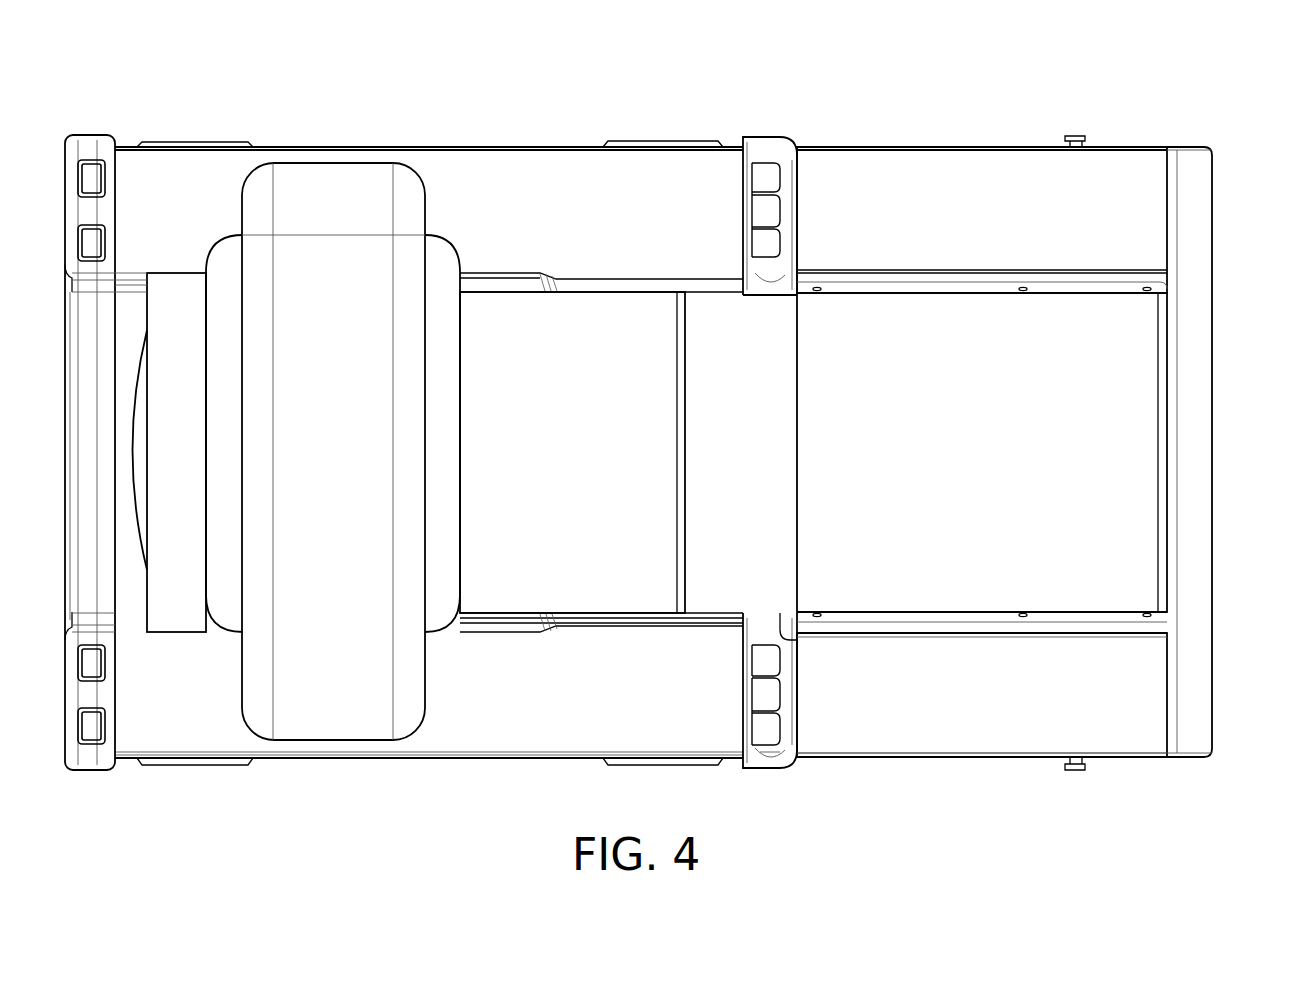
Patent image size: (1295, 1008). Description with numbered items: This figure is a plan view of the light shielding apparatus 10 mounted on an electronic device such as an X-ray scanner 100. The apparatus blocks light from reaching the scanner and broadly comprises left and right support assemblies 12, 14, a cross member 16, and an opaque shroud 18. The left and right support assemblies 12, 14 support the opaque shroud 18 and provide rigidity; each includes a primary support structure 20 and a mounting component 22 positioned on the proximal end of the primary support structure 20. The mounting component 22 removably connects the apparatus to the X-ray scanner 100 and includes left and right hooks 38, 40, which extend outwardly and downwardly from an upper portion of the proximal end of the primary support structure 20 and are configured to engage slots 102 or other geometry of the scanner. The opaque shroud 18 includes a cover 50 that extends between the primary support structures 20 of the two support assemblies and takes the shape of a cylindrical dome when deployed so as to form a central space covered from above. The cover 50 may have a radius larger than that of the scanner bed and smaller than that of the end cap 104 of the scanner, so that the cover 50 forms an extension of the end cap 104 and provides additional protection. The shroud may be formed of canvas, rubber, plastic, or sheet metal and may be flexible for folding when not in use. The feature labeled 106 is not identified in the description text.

The light shielding apparatus 10 is at (848, 88).
The left support assembly 12 is at (947, 780).
The right support assembly 14 is at (1020, 123).
The cross member 16 is at (1207, 328).
The opaque shroud 18 is at (1098, 518).
The primary support structure 20 is at (1000, 725).
The mounting component 22 is at (793, 780).
The left hook 38 is at (770, 725).
The right hook 40 is at (770, 662).
The cover 50 is at (946, 449).
The X-ray scanner 100 is at (397, 95).
The slots 102 is at (745, 740).
The end cap 104 is at (585, 325).
The corner 106 is at (778, 766).